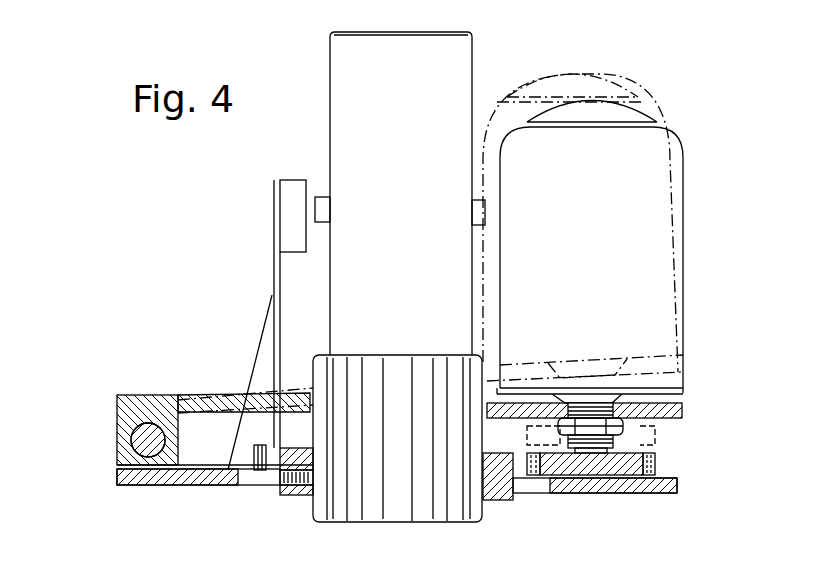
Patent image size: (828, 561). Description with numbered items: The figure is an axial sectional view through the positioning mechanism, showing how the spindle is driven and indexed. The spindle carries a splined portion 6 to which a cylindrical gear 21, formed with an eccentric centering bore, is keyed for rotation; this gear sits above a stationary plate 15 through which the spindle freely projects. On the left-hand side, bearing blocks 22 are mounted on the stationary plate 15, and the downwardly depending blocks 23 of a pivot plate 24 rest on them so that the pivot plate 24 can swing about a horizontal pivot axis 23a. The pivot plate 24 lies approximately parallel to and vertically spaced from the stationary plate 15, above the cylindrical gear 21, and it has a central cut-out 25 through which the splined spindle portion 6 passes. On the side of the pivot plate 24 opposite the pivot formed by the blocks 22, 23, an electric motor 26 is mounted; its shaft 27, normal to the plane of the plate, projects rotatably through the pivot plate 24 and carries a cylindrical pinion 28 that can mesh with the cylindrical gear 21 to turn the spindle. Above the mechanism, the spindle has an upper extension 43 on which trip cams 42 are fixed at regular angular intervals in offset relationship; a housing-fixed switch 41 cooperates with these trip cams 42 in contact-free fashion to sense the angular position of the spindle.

The splined portion 6 is at (320, 506).
The stationary plate 15 is at (193, 481).
The cylindrical gear 21 is at (270, 480).
The bearing blocks 22 is at (118, 472).
The downwardly depending blocks 23 is at (125, 410).
The horizontal pivot axis 23a is at (131, 436).
The pivot plate 24 is at (232, 393).
The central cut-out 25 is at (303, 393).
The electric motor 26 is at (662, 285).
The shaft 27 is at (608, 440).
The cylindrical pinion 28 is at (627, 470).
The switch 41 is at (288, 230).
The trip cams 42 is at (322, 197).
The upper extension 43 is at (345, 57).